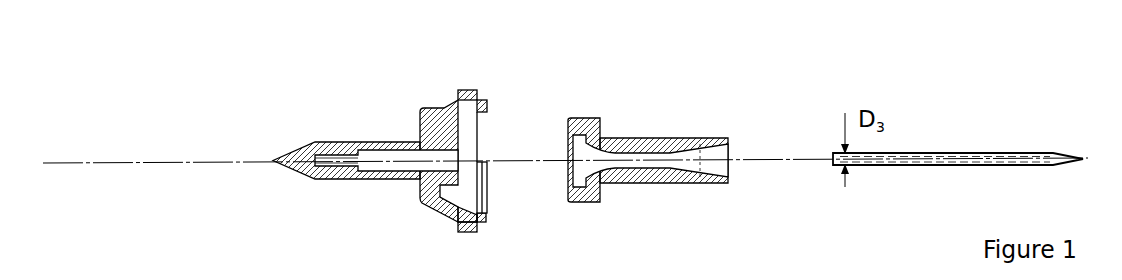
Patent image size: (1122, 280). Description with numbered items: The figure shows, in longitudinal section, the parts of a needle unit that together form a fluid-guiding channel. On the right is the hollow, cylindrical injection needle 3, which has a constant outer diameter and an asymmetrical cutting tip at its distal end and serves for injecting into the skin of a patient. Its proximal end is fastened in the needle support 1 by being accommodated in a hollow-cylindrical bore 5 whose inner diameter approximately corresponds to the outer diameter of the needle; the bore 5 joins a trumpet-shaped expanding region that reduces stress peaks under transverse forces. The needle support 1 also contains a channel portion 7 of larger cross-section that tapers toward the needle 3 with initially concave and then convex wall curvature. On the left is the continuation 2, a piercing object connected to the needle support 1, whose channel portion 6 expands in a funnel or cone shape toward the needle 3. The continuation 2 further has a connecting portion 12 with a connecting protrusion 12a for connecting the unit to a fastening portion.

The needle support 1 is at (648, 148).
The continuation 2 is at (382, 133).
The injection needle 3 is at (935, 153).
The hollow-cylindrical bore 5 is at (637, 167).
The portion of the fluid-guiding channel 6 is at (405, 165).
The portion of the fluid-guiding channel 7 is at (600, 130).
The connecting portion 12 is at (442, 103).
The connecting protrusion 12a is at (470, 90).